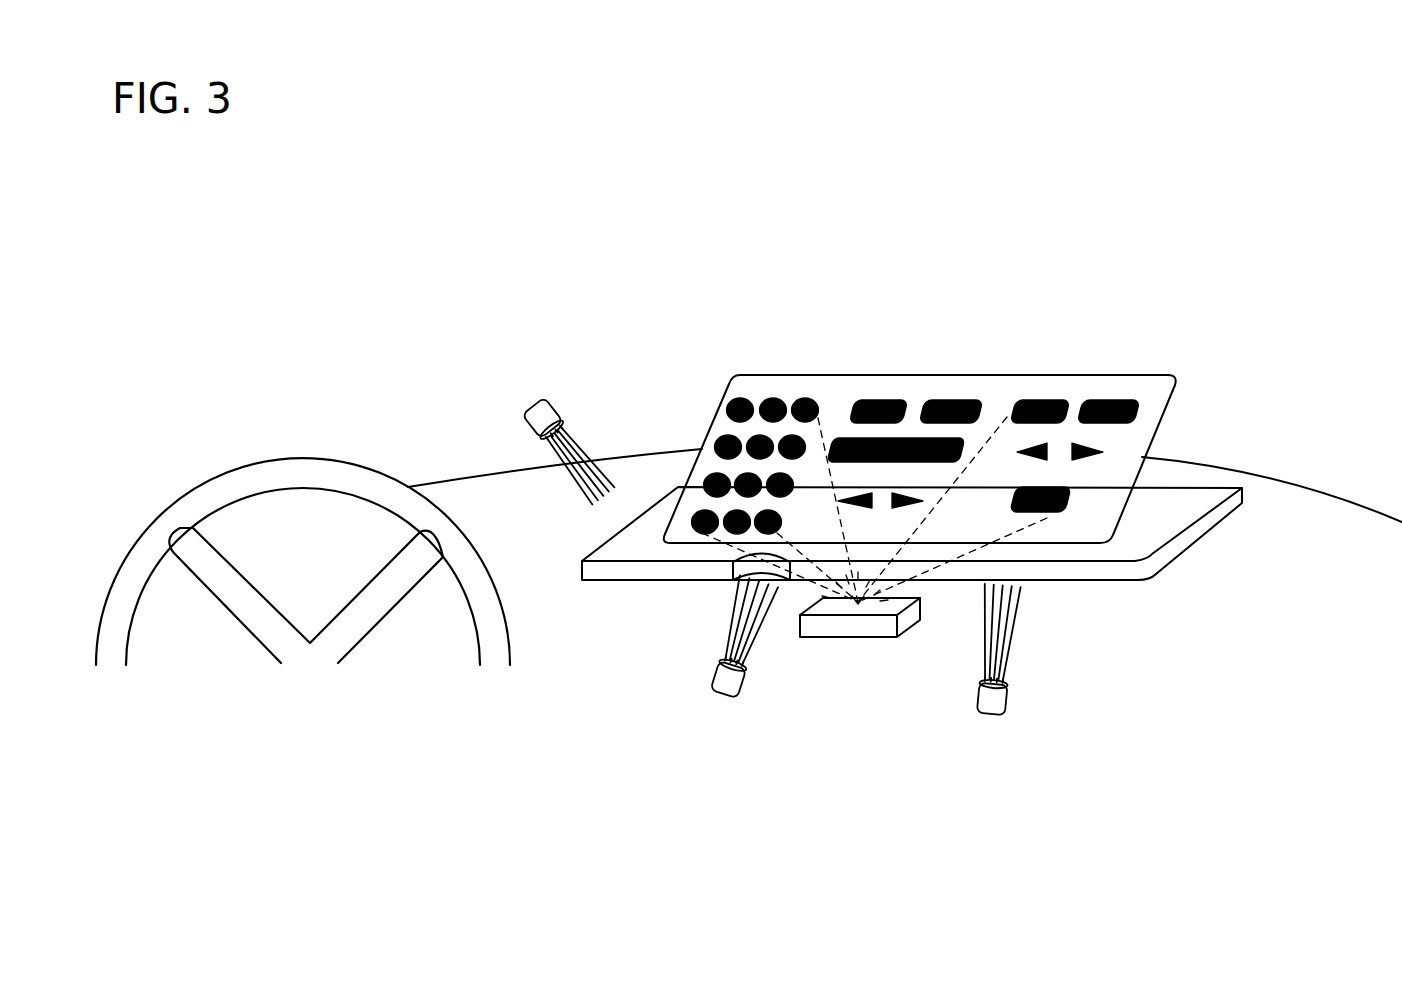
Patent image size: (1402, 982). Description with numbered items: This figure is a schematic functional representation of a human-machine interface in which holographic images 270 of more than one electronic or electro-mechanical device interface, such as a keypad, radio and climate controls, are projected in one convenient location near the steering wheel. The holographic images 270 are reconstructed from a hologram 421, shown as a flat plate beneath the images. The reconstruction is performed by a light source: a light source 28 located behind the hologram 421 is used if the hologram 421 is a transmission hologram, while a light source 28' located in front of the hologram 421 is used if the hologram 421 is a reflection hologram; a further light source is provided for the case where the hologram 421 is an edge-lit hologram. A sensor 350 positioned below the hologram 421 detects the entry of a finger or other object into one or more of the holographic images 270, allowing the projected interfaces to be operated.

The holographic images 270 is at (920, 416).
The hologram 421 is at (1130, 552).
The sensor 350 is at (857, 637).
The light source 28 is at (997, 696).
The light source 28' is at (584, 410).